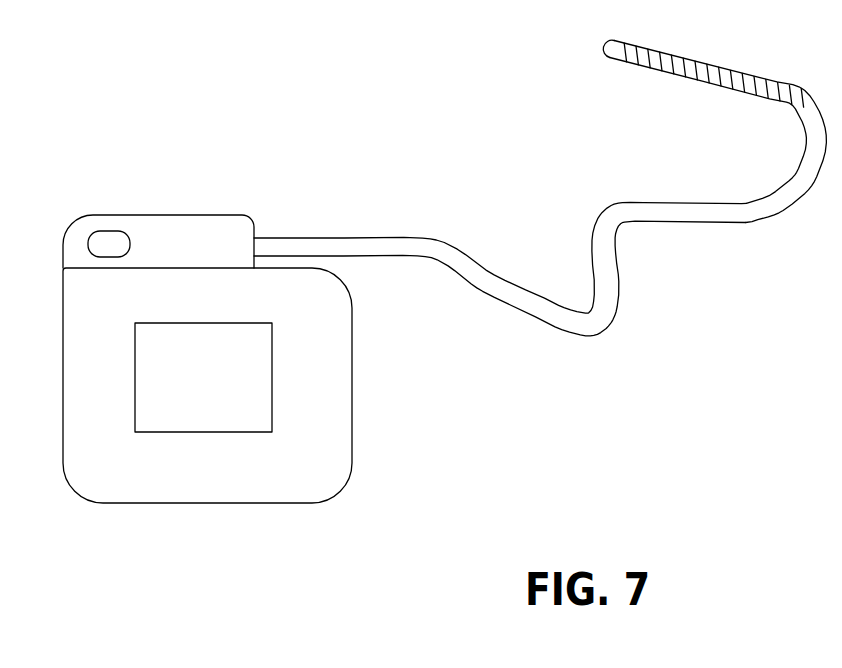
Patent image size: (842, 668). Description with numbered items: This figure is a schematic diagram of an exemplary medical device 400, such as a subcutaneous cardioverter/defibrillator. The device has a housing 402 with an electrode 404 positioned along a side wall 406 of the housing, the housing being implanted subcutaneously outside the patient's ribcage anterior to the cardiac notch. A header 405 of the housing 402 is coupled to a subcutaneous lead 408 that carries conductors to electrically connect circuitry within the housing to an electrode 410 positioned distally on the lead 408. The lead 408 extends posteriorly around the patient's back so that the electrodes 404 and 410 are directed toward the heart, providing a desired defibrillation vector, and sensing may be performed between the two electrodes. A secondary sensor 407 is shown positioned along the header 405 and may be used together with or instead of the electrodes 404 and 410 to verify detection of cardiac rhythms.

The medical device 400 is at (278, 77).
The housing 402 is at (278, 502).
The electrode 404 is at (135, 425).
The header 405 is at (188, 214).
The side wall 406 is at (240, 485).
The secondary sensor 407 is at (88, 247).
The subcutaneous lead 408 is at (590, 336).
The electrode 410 is at (709, 64).